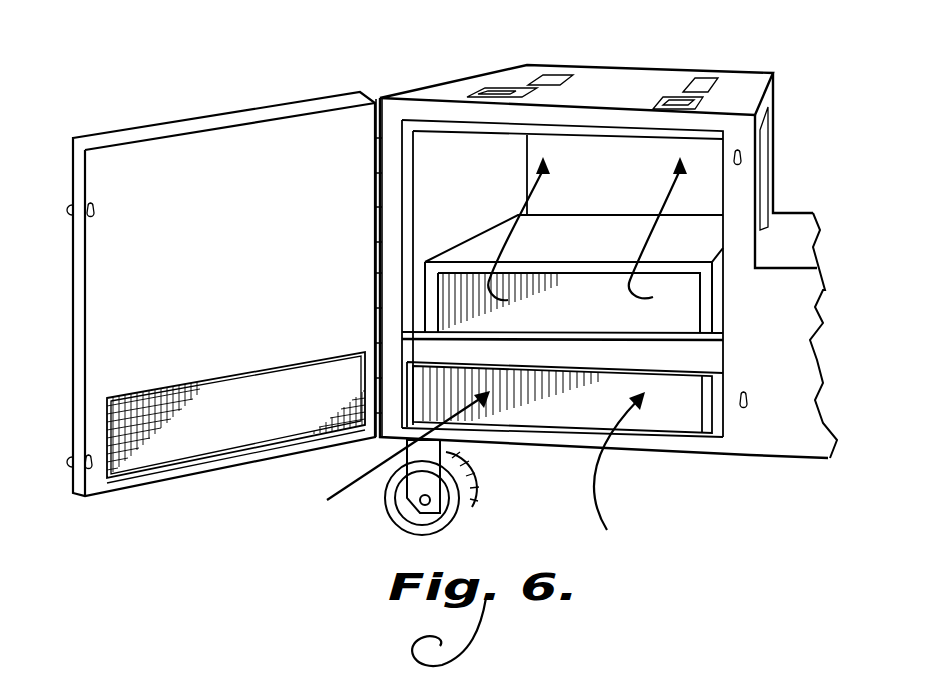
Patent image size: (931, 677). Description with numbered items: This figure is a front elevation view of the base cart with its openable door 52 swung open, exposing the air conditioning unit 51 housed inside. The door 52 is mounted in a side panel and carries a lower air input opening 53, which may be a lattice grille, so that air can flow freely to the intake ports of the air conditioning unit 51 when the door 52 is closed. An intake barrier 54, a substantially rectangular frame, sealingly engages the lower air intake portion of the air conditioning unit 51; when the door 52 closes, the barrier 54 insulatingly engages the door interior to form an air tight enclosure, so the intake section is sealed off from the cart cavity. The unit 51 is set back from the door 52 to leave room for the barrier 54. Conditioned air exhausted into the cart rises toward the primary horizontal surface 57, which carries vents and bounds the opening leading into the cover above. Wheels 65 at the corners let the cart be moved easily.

The air conditioning unit 51 is at (683, 302).
The openable door 52 is at (212, 122).
The lower air input opening 53 is at (238, 433).
The intake barrier 54 is at (700, 358).
The primary horizontal surface 57 is at (650, 82).
The wheels 65 is at (413, 517).